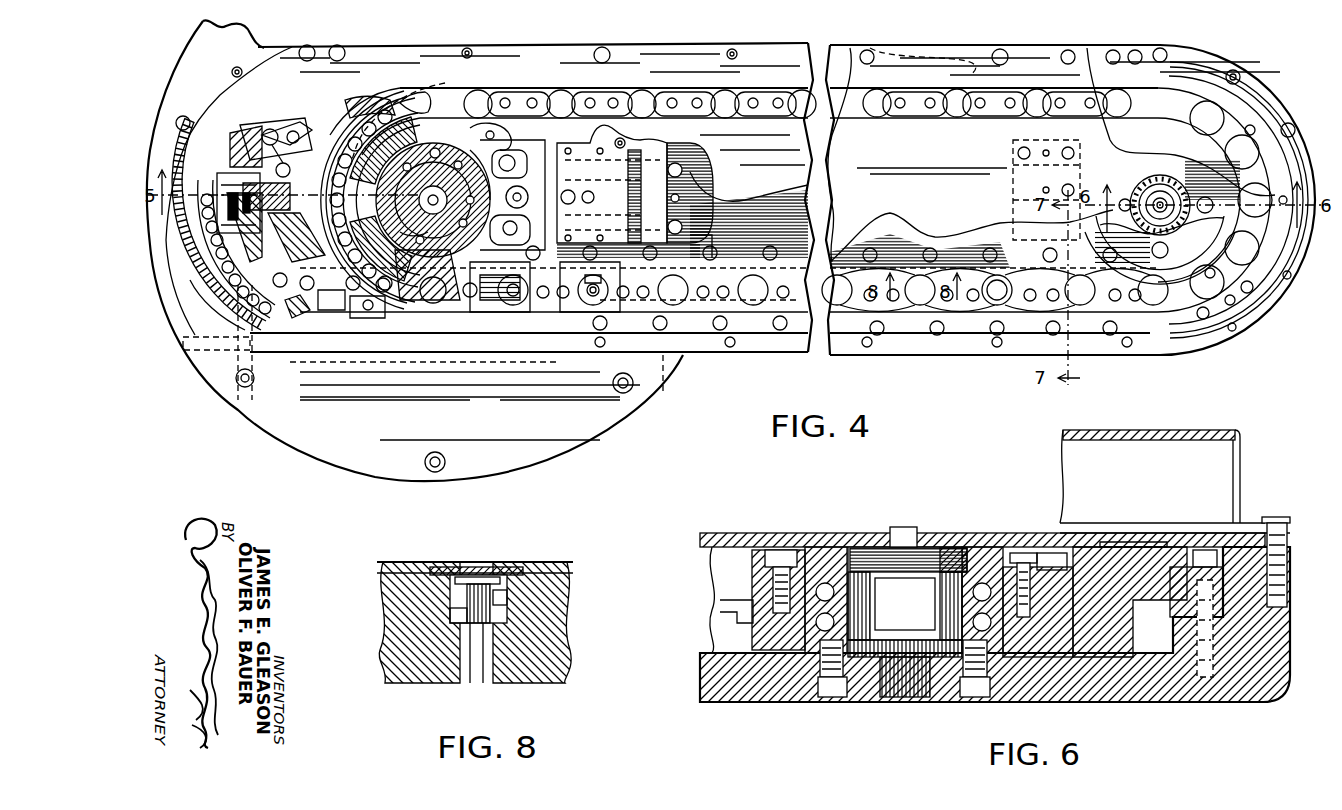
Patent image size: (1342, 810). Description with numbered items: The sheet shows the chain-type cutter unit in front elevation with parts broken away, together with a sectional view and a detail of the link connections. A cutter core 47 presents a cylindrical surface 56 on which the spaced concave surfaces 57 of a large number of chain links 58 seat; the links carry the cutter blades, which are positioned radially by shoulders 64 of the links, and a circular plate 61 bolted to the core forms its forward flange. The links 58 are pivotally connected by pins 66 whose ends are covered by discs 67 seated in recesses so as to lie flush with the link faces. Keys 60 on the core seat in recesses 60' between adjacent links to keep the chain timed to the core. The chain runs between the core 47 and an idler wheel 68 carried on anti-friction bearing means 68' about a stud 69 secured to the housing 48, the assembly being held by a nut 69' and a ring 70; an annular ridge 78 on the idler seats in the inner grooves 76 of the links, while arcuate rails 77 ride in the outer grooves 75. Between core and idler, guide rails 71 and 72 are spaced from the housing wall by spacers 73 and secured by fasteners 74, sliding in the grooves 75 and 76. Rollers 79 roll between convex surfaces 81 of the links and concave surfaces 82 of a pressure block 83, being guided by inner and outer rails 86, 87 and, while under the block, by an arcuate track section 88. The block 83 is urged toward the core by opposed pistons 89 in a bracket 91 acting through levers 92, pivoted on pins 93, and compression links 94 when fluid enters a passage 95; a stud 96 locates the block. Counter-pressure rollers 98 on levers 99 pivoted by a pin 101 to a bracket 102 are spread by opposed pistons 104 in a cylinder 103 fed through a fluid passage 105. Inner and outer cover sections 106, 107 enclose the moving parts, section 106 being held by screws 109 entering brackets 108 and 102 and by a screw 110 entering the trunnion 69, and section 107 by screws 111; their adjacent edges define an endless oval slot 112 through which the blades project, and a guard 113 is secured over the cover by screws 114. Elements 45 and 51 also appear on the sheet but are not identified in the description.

In FIG. 4, the frame 45 is at (700, 244).
In FIG. 4, the cutter core 47 is at (505, 314).
In FIG. 4, the housing 48 is at (770, 352).
In FIG. 6, the housing 48 is at (1180, 690).
In FIG. 4, the housing bottom plate 51 is at (492, 409).
In FIG. 4, the cylindrical surface 56 is at (412, 158).
In FIG. 4, the concave surfaces 57 is at (593, 315).
In FIG. 4, the chain links 58 is at (428, 218).
In FIG. 8, the chain links 58 is at (500, 672).
In FIG. 6, the chain links 58 is at (1115, 570).
In FIG. 4, the keys 60 is at (398, 200).
In FIG. 4, the recesses 60' is at (412, 234).
In FIG. 4, the circular plate 61 is at (470, 148).
In FIG. 6, the shoulders 64 is at (1160, 580).
In FIG. 4, the pins 66 is at (594, 296).
In FIG. 8, the pins 66 is at (472, 576).
In FIG. 4, the discs 67 is at (732, 105).
In FIG. 8, the discs 67 is at (507, 568).
In FIG. 4, the idler wheel 68 is at (1169, 222).
In FIG. 6, the idler wheel 68 is at (877, 637).
In FIG. 4, the anti-friction bearing means 68' is at (1181, 190).
In FIG. 6, the anti-friction bearing means 68' is at (897, 547).
In FIG. 6, the stud 69 is at (905, 637).
In FIG. 6, the nut 69' is at (955, 536).
In FIG. 6, the ring 70 is at (760, 533).
In FIG. 4, the guide rail 71 is at (486, 315).
In FIG. 4, the guide rail 72 is at (742, 242).
In FIG. 6, the spacers 73 is at (1216, 590).
In FIG. 6, the fasteners 74 is at (1240, 525).
In FIG. 6, the grooves 75 is at (1187, 580).
In FIG. 6, the grooves 76 is at (1070, 598).
In FIG. 4, the arcuate rails 77 is at (1272, 292).
In FIG. 6, the arcuate rails 77 is at (1210, 558).
In FIG. 6, the annular ridge 78 is at (745, 606).
In FIG. 4, the rollers 79 is at (368, 320).
In FIG. 4, the convex arcuate surfaces 81 is at (430, 302).
In FIG. 4, the concave surfaces 82 is at (400, 98).
In FIG. 4, the pressure block 83 is at (345, 130).
In FIG. 4, the inner rail 86 is at (295, 320).
In FIG. 4, the outer rail 87 is at (240, 300).
In FIG. 4, the arcuate track section 88 is at (332, 312).
In FIG. 4, the opposed pistons 89 is at (220, 285).
In FIG. 4, the bracket 91 is at (230, 192).
In FIG. 4, the levers 92 is at (250, 163).
In FIG. 4, the pins 93 is at (258, 145).
In FIG. 4, the compression links 94 is at (215, 355).
In FIG. 4, the passage 95 is at (238, 372).
In FIG. 4, the stud 96 is at (406, 94).
In FIG. 4, the rollers 98 is at (504, 145).
In FIG. 4, the levers 99 is at (540, 160).
In FIG. 4, the pin 101 is at (510, 160).
In FIG. 4, the bracket 102 is at (640, 152).
In FIG. 4, the cylinder 103 is at (640, 212).
In FIG. 4, the opposed pistons 104 is at (712, 180).
In FIG. 4, the fluid passage 105 is at (673, 388).
In FIG. 4, the inner cover section 106 is at (922, 207).
In FIG. 8, the inner cover section 106 is at (537, 562).
In FIG. 6, the inner cover section 106 is at (800, 533).
In FIG. 4, the outer cover section 107 is at (263, 96).
In FIG. 4, the brackets 108 is at (1085, 195).
In FIG. 4, the screws 109 is at (628, 143).
In FIG. 6, the screw 110 is at (905, 527).
In FIG. 4, the screws 111 is at (602, 47).
In FIG. 4, the endless slot 112 is at (914, 120).
In FIG. 4, the guard 113 is at (1185, 88).
In FIG. 6, the guard 113 is at (1237, 440).
In FIG. 4, the screws 114 is at (1240, 72).
In FIG. 6, the screws 114 is at (1268, 517).